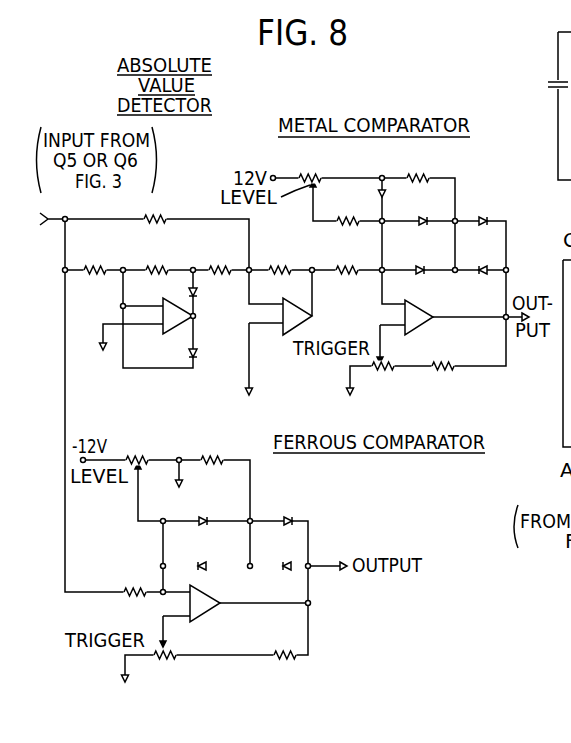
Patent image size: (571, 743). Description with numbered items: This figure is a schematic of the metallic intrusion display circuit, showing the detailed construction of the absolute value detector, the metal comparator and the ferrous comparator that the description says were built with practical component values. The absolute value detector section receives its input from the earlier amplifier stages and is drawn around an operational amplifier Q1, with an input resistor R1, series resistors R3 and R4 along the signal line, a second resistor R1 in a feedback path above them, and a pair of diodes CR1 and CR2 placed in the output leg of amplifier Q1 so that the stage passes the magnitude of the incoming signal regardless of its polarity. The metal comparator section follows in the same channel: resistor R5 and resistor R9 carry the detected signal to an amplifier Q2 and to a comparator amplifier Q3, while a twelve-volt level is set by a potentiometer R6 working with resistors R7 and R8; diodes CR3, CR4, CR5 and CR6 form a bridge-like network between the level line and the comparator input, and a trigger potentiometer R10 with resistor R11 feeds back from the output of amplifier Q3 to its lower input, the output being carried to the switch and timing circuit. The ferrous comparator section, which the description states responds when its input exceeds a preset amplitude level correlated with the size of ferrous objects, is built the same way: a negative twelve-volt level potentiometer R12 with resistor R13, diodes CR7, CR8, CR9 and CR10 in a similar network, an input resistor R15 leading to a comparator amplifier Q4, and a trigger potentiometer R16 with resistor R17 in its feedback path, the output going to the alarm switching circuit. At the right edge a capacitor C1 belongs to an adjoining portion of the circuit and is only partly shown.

The resistor R1 is at (125, 232).
The resistor R3 is at (157, 261).
The resistor R4 is at (221, 261).
The resistor R5 is at (281, 259).
The potentiometer (12V level) R6 is at (311, 165).
The resistor R7 is at (419, 165).
The resistor R8 is at (348, 209).
The resistor R9 is at (347, 259).
The potentiometer (trigger) R10 is at (384, 377).
The resistor R11 is at (445, 377).
The potentiometer (-12V level) R12 is at (136, 450).
The resistor R13 is at (212, 450).
The resistor R15 is at (134, 582).
The potentiometer (trigger) R16 is at (164, 667).
The resistor R17 is at (284, 667).
The diode CR1 is at (209, 293).
The diode CR2 is at (211, 355).
The diode CR3 is at (424, 208).
The diode CR4 is at (483, 208).
The diode CR5 is at (422, 259).
The diode CR6 is at (482, 259).
The diode CR7 is at (202, 510).
The diode CR8 is at (285, 510).
The diode CR9 is at (201, 555).
The diode CR10 is at (284, 555).
The operational amplifier Q1 is at (174, 306).
The operational amplifier Q2 is at (291, 307).
The operational amplifier Q3 is at (411, 306).
The operational amplifier Q4 is at (211, 597).
The capacitor C1 is at (552, 73).